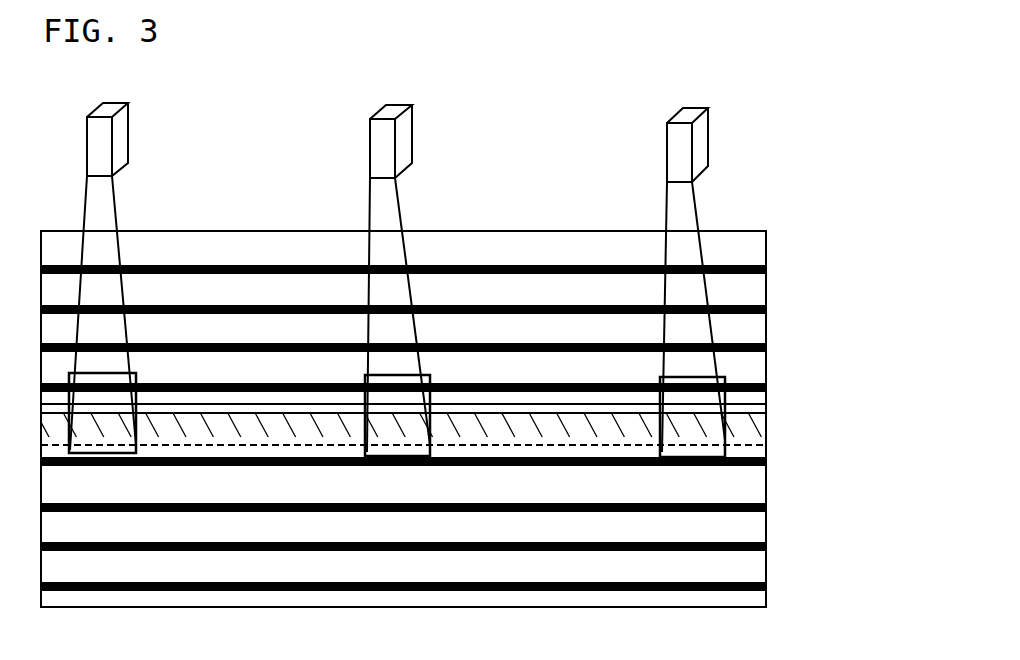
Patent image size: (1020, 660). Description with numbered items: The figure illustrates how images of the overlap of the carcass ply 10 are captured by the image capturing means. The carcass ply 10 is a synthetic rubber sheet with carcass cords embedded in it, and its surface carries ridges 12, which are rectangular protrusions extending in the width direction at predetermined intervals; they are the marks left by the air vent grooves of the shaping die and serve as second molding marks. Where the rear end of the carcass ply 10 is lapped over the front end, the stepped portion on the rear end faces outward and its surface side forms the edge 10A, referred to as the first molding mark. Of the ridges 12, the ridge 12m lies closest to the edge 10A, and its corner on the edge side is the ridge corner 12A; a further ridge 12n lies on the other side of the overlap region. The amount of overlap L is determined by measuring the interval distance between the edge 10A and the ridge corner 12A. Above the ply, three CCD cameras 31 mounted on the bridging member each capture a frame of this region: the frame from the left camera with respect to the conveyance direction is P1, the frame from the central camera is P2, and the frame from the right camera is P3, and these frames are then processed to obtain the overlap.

The carcass ply 10 is at (768, 233).
The ridges 12 is at (767, 276).
The ridge closer to the edge 12m is at (767, 392).
The light emitting portion adjacent to boundary (lower) 12n is at (767, 468).
The ridge corner 12A is at (752, 404).
The edge 10A is at (760, 414).
The amount of overlap L is at (755, 436).
The CCD cameras 31 is at (122, 135).
The frame captured by the left camera P1 is at (115, 374).
The frame captured by the central camera P2 is at (425, 376).
The frame captured by the right camera P3 is at (668, 378).